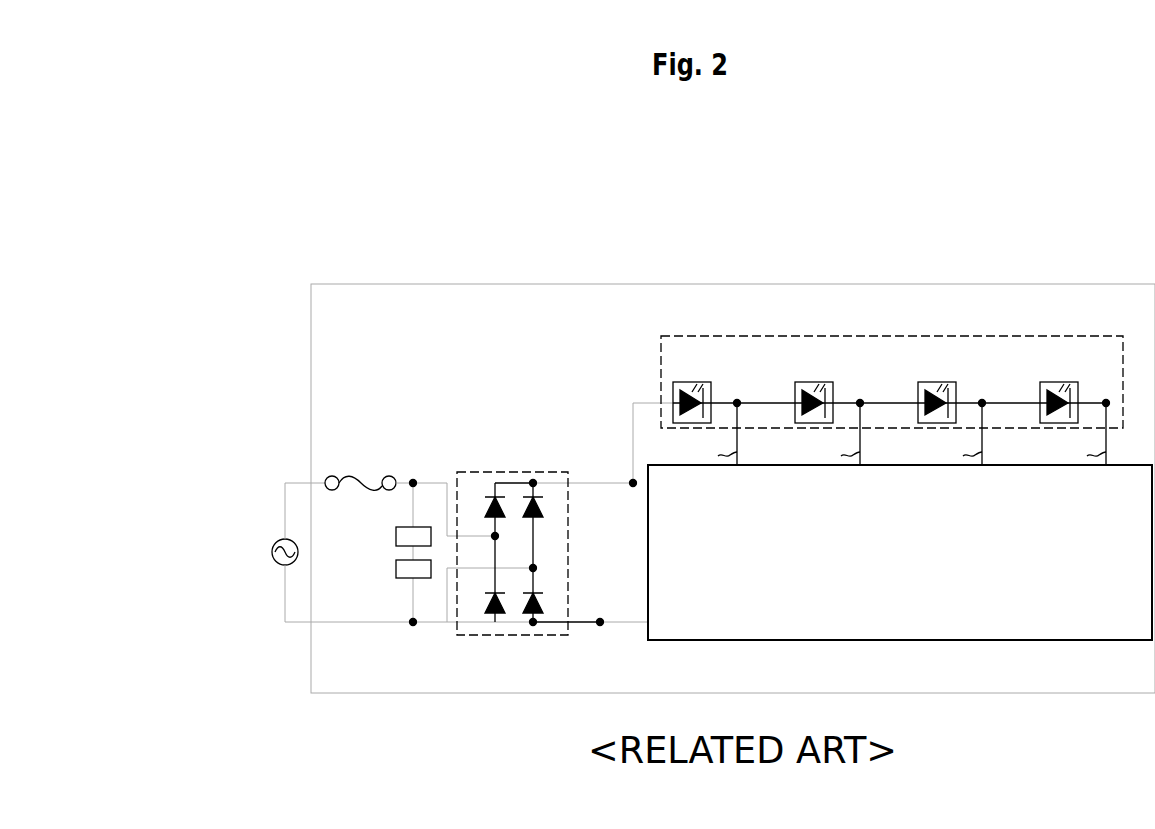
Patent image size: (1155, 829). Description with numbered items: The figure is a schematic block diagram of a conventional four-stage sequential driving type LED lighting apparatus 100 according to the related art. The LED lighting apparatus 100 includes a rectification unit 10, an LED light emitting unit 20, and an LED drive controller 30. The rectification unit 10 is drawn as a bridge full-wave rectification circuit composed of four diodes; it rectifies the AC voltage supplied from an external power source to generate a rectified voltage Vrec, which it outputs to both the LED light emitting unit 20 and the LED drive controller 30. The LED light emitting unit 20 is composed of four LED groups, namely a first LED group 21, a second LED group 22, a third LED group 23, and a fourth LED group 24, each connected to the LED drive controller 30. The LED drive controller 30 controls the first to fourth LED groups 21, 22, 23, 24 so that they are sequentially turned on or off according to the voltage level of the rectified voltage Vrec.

The LED lighting apparatus 100 is at (697, 284).
The rectification unit 10 is at (512, 472).
The LED light emitting unit 20 is at (892, 364).
The first LED group 21 is at (713, 385).
The second LED group 22 is at (835, 385).
The third LED group 23 is at (958, 385).
The fourth LED group 24 is at (1080, 385).
The LED drive controller 30 is at (897, 640).